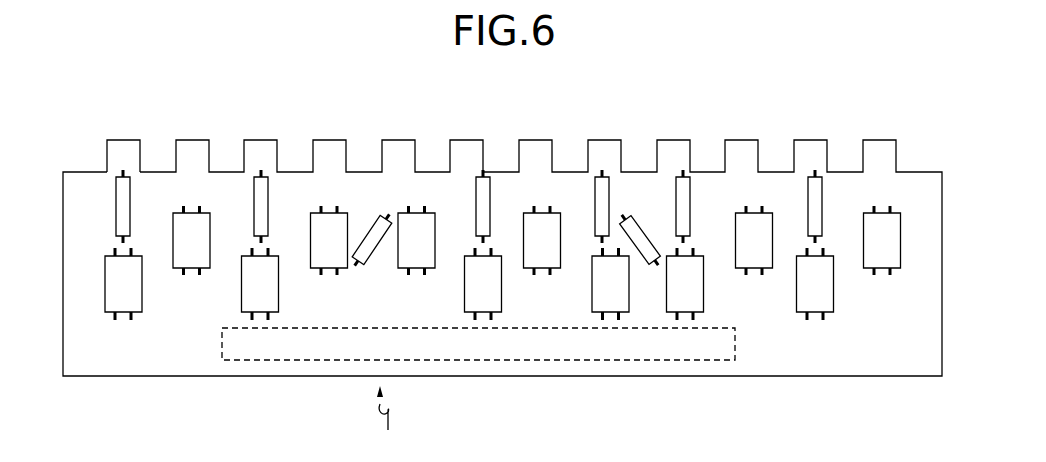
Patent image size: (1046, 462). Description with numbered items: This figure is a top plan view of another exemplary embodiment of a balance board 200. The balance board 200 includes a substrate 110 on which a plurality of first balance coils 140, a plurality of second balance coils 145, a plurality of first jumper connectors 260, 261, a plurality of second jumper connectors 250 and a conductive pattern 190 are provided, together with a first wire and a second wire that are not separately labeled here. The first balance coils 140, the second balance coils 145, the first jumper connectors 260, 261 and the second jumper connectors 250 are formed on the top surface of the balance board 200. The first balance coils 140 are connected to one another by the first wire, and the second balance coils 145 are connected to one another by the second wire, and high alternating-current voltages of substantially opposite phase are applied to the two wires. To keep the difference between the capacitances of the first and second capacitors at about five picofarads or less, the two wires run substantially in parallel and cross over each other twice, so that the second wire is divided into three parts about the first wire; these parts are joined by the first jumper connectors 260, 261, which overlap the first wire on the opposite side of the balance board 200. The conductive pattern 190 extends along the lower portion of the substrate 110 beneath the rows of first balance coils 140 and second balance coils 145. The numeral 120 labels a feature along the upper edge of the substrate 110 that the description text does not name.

The substrate 110 is at (908, 343).
The connector tab 120 is at (127, 148).
The first balance coils 140 is at (128, 289).
The second balance coils 145 is at (197, 248).
The conductive pattern 190 is at (275, 360).
The balance board 200 is at (389, 415).
The second jumper connectors 250 is at (125, 198).
The first jumper connector 260 is at (378, 232).
The first jumper connector 261 is at (636, 236).